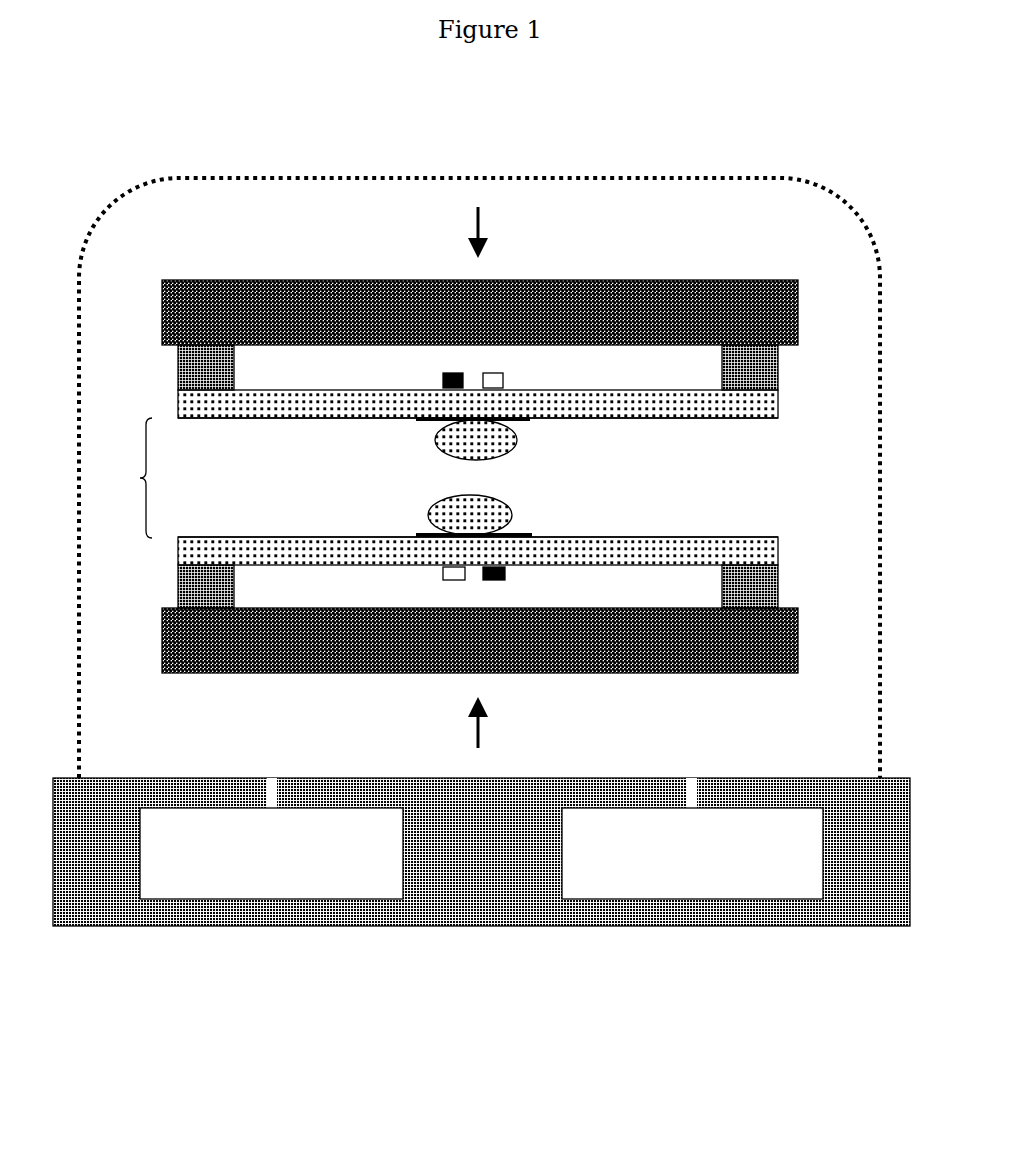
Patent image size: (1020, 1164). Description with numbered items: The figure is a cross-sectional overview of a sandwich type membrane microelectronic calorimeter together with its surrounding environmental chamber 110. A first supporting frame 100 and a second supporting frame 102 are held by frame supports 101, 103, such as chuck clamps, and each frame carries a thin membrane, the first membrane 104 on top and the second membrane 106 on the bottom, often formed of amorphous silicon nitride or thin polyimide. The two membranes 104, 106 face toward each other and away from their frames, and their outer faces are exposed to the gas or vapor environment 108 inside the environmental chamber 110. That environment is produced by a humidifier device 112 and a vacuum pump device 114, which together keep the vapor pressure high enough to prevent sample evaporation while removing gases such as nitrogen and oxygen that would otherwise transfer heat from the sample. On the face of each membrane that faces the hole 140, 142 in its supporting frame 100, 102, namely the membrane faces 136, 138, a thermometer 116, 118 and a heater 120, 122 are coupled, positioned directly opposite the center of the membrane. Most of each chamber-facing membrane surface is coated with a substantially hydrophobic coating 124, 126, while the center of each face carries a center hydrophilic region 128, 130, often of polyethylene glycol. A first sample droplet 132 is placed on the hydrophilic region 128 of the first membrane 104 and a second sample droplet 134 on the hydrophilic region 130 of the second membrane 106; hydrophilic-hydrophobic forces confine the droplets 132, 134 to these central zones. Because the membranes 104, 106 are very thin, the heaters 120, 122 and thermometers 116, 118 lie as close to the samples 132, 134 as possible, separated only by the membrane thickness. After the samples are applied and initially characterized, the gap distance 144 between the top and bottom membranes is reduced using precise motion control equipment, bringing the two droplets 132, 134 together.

The first supporting frame 100 is at (480, 348).
The frame support 101 is at (185, 270).
The second supporting frame 102 is at (480, 615).
The frame support 103 is at (178, 688).
The first membrane 104 is at (677, 403).
The second membrane 106 is at (690, 550).
The gas or vapor environment 108 is at (683, 228).
The environmental chamber 110 is at (835, 187).
The humidifier device 112 is at (292, 899).
The vacuum pump device 114 is at (650, 899).
The thermometer 116 is at (510, 381).
The thermometer 118 is at (437, 577).
The heater 120 is at (428, 381).
The heater 122 is at (515, 577).
The hydrophobic coating 124 is at (570, 420).
The hydrophobic coating 126 is at (572, 530).
The center hydrophilic region 128 is at (426, 430).
The center hydrophilic region 130 is at (418, 525).
The first sample droplet 132 is at (458, 447).
The second sample droplet 134 is at (478, 504).
The membrane face facing the hole 136 is at (627, 380).
The membrane face facing the hole 138 is at (614, 575).
The hole 140 is at (302, 365).
The hole 142 is at (302, 595).
The gap distance 144 is at (126, 478).